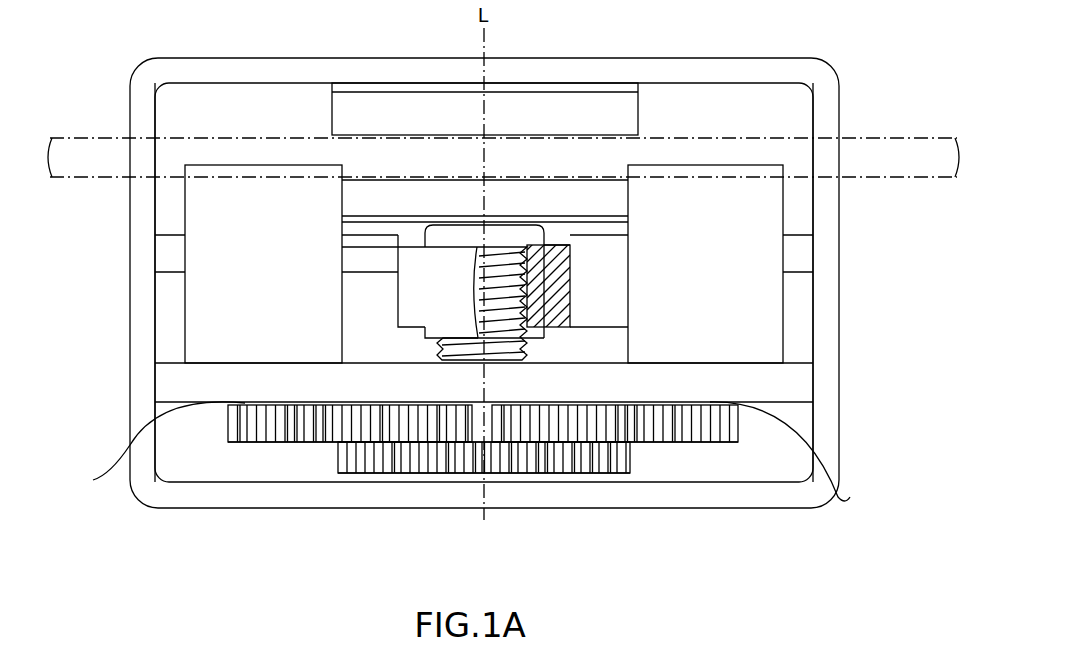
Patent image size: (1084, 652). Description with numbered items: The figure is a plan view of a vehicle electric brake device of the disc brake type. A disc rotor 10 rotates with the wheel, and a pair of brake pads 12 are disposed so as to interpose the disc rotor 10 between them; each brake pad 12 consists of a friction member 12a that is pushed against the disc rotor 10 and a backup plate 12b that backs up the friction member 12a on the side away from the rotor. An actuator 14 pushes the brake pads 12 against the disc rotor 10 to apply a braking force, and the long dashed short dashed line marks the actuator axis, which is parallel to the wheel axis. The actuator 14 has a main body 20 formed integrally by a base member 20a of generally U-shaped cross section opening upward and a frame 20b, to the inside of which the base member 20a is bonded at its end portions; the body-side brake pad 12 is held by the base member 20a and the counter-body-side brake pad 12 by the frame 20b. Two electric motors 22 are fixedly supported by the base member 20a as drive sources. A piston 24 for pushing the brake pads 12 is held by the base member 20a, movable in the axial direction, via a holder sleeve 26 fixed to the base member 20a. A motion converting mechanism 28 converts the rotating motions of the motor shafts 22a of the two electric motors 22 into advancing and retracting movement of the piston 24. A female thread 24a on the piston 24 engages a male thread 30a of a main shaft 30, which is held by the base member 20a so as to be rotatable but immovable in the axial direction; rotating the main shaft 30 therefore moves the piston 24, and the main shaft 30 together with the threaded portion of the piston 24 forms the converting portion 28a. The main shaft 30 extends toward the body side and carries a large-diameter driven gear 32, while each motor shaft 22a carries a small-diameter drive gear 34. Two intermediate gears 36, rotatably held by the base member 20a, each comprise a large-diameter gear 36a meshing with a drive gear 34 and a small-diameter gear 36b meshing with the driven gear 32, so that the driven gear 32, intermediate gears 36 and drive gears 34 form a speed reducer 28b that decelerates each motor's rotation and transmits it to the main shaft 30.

The disc rotor 10 is at (888, 147).
The brake pad 12 is at (597, 173).
The friction member 12a is at (340, 113).
The backup plate 12b is at (337, 83).
The actuator 14 is at (797, 545).
The main body 20 is at (847, 342).
The base member 20a is at (798, 303).
The frame 20b is at (832, 437).
The electric motor 22 is at (210, 205).
The motor shaft 22a is at (469, 455).
The piston 24 is at (442, 237).
The female thread 24a is at (523, 273).
The holder sleeve 26 is at (410, 308).
The motion converting mechanism 28 is at (400, 497).
The converting portion 28a is at (242, 442).
The speed reducer 28b is at (545, 488).
The main shaft 30 is at (533, 348).
The male thread 30a is at (538, 305).
The driven gear 32 is at (445, 460).
The drive gear 34 is at (243, 441).
The intermediate gear 36 is at (325, 472).
The large-diameter gear 36a is at (405, 342).
The small-diameter gear 36b is at (358, 467).